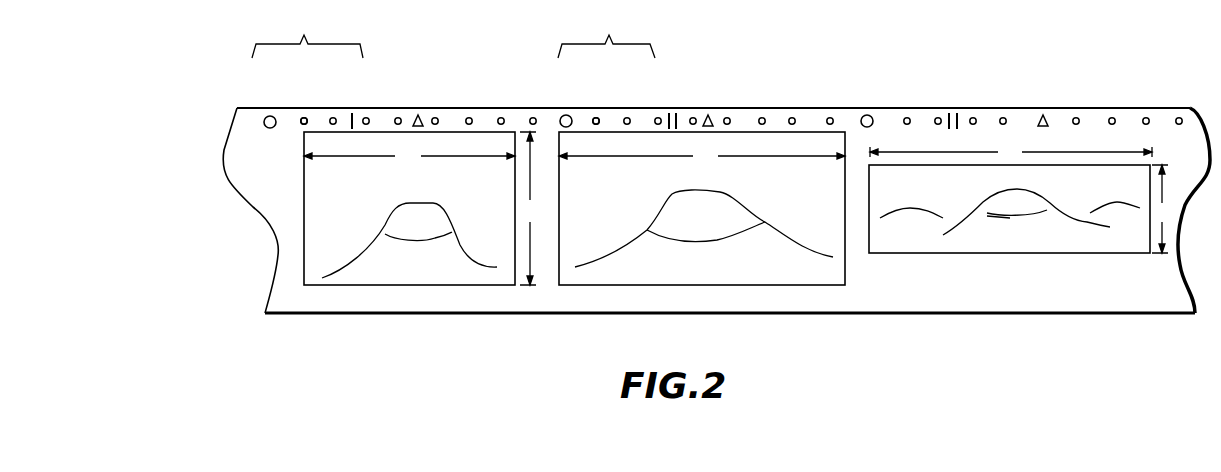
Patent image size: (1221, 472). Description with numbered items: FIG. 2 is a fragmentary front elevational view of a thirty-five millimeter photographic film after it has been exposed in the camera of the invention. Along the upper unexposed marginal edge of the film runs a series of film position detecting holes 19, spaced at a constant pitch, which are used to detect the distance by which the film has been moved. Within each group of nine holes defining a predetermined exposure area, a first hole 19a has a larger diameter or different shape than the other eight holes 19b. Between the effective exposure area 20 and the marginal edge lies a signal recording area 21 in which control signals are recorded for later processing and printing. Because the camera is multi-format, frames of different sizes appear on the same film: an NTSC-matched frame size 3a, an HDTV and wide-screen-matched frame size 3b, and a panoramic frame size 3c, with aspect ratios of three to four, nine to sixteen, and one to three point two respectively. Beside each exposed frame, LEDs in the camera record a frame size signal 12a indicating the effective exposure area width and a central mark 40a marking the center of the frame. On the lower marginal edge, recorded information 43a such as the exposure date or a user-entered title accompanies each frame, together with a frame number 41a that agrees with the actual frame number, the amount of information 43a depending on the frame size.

The film position detecting holes 19 is at (453, 34).
The first hole 19a is at (272, 116).
The other holes 19b is at (306, 118).
The frame size signal 12a is at (352, 113).
The central mark 40a is at (420, 116).
The signal recording area 21 is at (806, 119).
The effective exposure area 20 is at (312, 243).
The information 43a is at (353, 313).
The NTSC-matched frame size 3a is at (407, 278).
The HDTV and wide-screen-matched frame size 3b is at (727, 273).
The panoramic frame size 3c is at (1022, 243).
The frame number 41a is at (505, 300).